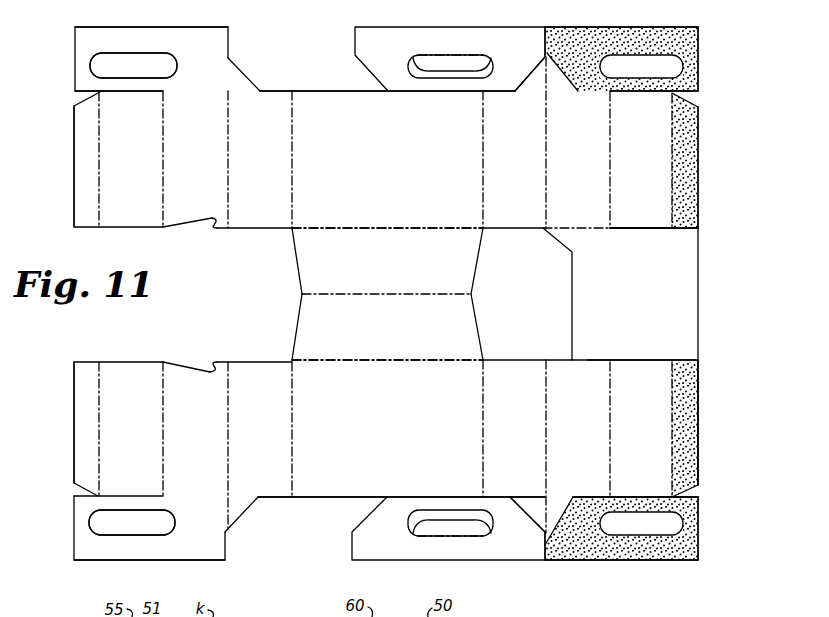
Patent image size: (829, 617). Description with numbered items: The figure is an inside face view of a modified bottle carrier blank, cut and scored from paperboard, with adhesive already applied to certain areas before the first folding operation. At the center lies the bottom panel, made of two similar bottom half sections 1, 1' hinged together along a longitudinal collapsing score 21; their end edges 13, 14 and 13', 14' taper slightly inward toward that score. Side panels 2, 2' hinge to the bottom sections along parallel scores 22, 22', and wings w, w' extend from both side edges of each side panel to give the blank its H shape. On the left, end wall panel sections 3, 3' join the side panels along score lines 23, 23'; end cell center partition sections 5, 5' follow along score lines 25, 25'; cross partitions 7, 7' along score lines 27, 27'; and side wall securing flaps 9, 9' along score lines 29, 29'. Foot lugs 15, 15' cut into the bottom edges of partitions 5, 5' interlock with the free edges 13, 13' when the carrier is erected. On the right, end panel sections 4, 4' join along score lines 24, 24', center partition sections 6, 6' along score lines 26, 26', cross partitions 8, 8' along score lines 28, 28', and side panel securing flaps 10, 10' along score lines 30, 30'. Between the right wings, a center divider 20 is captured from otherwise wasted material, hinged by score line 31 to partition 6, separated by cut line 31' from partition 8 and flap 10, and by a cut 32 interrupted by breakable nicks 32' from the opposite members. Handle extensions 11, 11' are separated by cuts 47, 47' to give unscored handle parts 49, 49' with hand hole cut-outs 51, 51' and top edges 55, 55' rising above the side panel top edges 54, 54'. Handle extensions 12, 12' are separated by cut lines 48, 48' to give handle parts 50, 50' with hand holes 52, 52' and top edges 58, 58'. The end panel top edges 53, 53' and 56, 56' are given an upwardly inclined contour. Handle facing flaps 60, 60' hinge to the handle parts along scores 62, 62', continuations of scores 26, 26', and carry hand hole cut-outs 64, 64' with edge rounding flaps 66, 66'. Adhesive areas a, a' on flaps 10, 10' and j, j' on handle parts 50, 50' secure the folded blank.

The bottom half section 1 is at (387, 250).
The bottom half section 1' is at (387, 336).
The side panel 2 is at (387, 130).
The side panel 2' is at (370, 456).
The end wall panel section 3 is at (254, 159).
The end wall panel section 3' is at (254, 393).
The end panel section 4 is at (501, 130).
The end panel section 4' is at (514, 456).
The end cell center partition section 5 is at (187, 184).
The end cell center partition section 5' is at (186, 393).
The end cell center partition section 6 is at (576, 189).
The end cell center partition section 6' is at (578, 397).
The cross partition 7 is at (119, 184).
The cross partition 7' is at (118, 393).
The cross partition 8 is at (654, 189).
The cross partition 8' is at (635, 456).
The side wall securing flap 9 is at (71, 159).
The side wall securing flap 9' is at (72, 429).
The side panel securing flap 10 is at (708, 160).
The side panel securing flap 10' is at (709, 428).
The handle extension 11 is at (134, 59).
The handle extension 11' is at (127, 528).
The handle extension 12 is at (642, 59).
The handle extension 12' is at (644, 528).
The end edge of bottom half section 13 is at (281, 261).
The end edge of bottom half section 13' is at (280, 327).
The end edge of bottom half section 14 is at (490, 261).
The end edge of bottom half section 14' is at (494, 327).
The foot lug 15 is at (198, 236).
The foot lug 15' is at (202, 351).
The center divider 20 is at (620, 301).
The collapsing score 21 is at (357, 294).
The score 22 is at (387, 216).
The score 22' is at (387, 373).
The score line 23 is at (306, 159).
The score line 23' is at (312, 429).
The score line 24 is at (464, 159).
The score line 24' is at (466, 428).
The score line 25 is at (242, 159).
The score line 25' is at (246, 447).
The score line 26 is at (531, 142).
The score line 26' is at (530, 446).
The score line 27 is at (177, 159).
The score line 27' is at (183, 428).
The score line 28 is at (595, 160).
The score line 28' is at (594, 429).
The score line 29 is at (111, 159).
The score line 29' is at (114, 428).
The score line 30 is at (658, 161).
The score line 30' is at (652, 429).
The score line 31 is at (527, 294).
The cut line 31' is at (654, 244).
The cut 32 is at (643, 343).
The nick connection 32' is at (638, 343).
The cut 47 is at (119, 101).
The cut 47' is at (118, 484).
The cut line 48 is at (654, 102).
The cut line 48' is at (635, 485).
The handle part 49 is at (103, 65).
The handle part 49' is at (100, 519).
The handle part 50 is at (683, 49).
The handle part 50' is at (691, 544).
The hand hole cut-out 51 is at (133, 41).
The hand hole cut-out 51' is at (132, 545).
The hand hole cut-out 52 is at (641, 42).
The hand hole cut-out 52' is at (641, 553).
The top forming edge 53 is at (252, 72).
The top forming edge 53' is at (251, 524).
The top edge 54 is at (387, 79).
The top edge 54' is at (401, 511).
The top forming edge 55 is at (151, 16).
The top forming edge 55' is at (149, 571).
The top edge 56 is at (529, 84).
The top edge 56' is at (527, 506).
The top edge 58 is at (621, 16).
The top edge 58' is at (621, 573).
The handle facing flap 60 is at (450, 49).
The handle facing flap 60' is at (448, 542).
The score line 62 is at (531, 32).
The score line 62' is at (535, 559).
The hand hole cut-out 64 is at (452, 85).
The hand hole cut-out 64' is at (449, 504).
The edge rounding flap 66 is at (450, 42).
The edge rounding flap 66' is at (450, 548).
The area of adhesive a is at (712, 167).
The area of adhesive a' is at (711, 422).
The area of adhesive j is at (569, 84).
The area of adhesive j' is at (571, 555).
The wing w is at (45, 166).
The wing w' is at (386, 422).